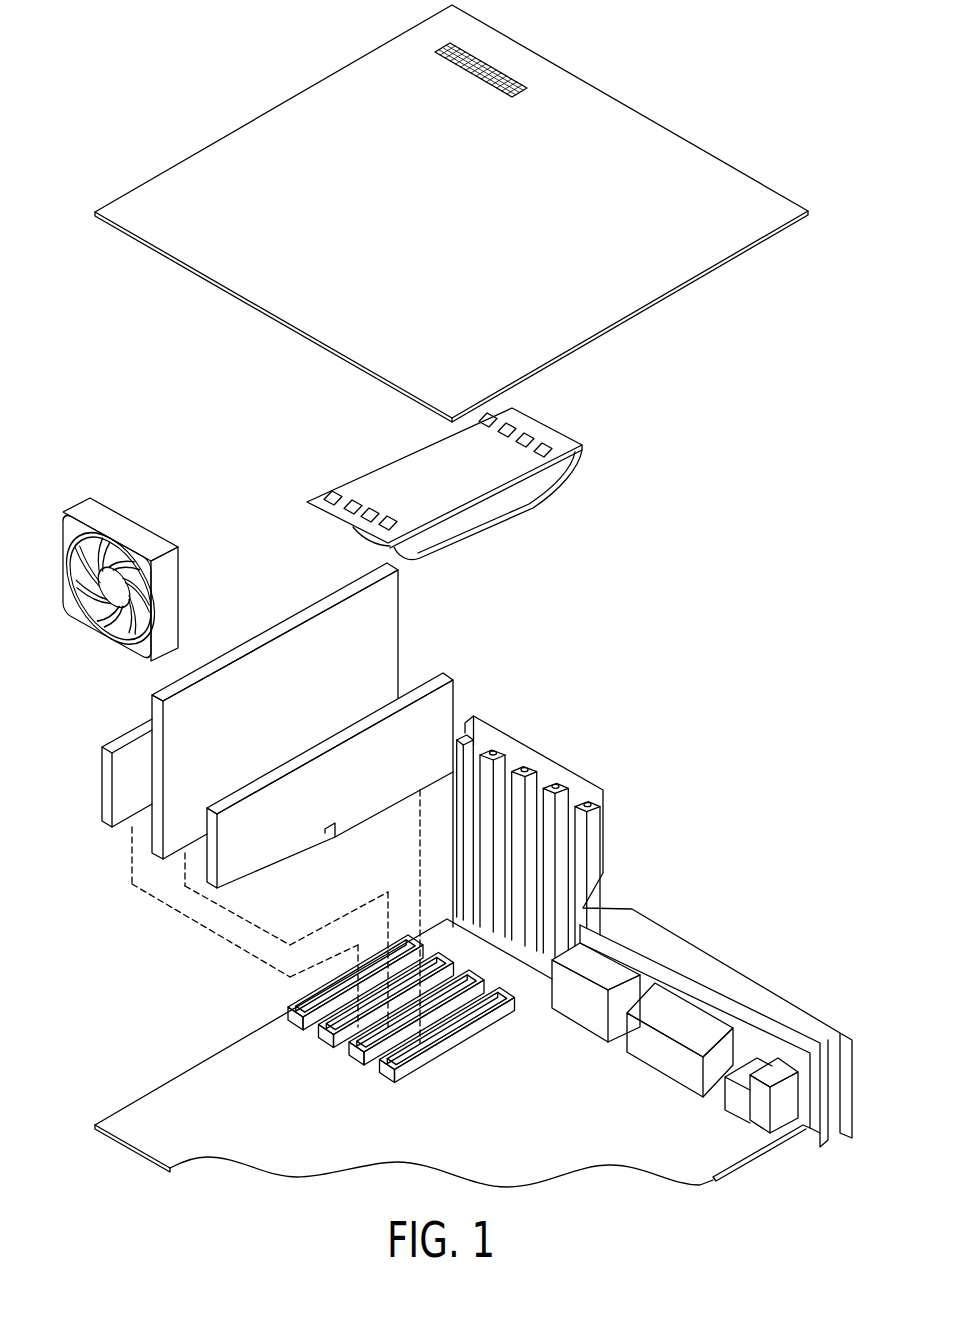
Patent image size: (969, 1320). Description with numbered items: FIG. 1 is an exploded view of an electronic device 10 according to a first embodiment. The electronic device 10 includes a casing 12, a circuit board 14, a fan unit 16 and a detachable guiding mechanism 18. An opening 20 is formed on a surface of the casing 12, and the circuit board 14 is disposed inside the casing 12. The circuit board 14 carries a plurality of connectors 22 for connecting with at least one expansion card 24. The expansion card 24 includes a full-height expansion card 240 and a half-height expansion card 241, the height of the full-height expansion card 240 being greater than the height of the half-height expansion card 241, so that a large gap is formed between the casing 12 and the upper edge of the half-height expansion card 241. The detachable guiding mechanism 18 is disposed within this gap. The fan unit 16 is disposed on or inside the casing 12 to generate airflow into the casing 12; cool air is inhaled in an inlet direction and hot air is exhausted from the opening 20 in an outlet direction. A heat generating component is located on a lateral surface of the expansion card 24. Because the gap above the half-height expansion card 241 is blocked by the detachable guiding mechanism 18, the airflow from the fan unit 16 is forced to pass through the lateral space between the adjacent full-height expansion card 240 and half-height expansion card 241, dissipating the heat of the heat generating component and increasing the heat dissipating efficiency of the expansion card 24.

The electronic device 10 is at (713, 62).
The casing 12 is at (660, 150).
The circuit board 14 is at (722, 1160).
The fan unit 16 is at (110, 507).
The detachable guiding mechanism 18 is at (518, 490).
The opening 20 is at (510, 70).
The connectors 22 is at (288, 1020).
The expansion card 24 is at (238, 803).
The full-height expansion card 240 is at (167, 712).
The half-height expansion card 241 is at (112, 768).